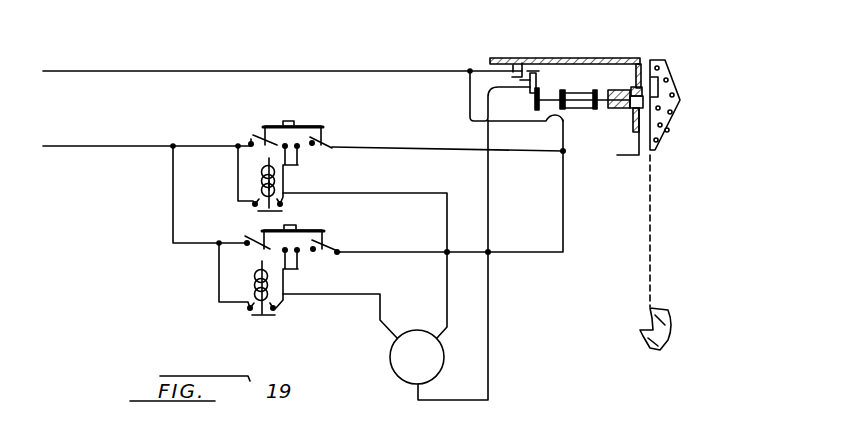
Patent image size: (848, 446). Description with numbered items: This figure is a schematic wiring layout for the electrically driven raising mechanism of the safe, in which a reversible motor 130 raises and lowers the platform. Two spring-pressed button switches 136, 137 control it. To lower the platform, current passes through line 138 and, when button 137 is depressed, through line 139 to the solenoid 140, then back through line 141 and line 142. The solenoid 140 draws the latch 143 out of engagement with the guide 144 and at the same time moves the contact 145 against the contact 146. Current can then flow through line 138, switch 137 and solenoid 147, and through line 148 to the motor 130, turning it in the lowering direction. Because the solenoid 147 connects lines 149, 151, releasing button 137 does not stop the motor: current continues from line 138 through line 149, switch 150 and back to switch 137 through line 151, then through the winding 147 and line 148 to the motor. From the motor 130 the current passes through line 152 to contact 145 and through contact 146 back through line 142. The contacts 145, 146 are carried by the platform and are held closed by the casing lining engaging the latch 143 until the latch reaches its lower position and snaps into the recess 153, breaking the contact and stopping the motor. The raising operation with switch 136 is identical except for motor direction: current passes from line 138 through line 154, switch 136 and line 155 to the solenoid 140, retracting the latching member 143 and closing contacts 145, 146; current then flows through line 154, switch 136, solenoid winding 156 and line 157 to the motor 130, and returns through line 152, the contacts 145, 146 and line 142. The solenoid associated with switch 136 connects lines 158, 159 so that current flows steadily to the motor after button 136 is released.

The motor 130 is at (398, 364).
The button switch 136 is at (311, 263).
The button switch 137 is at (295, 161).
The line 138 is at (85, 147).
The line 139 is at (389, 148).
The solenoid 140 is at (571, 95).
The line 141 is at (504, 122).
The line 142 is at (237, 72).
The latch 143 is at (642, 100).
The guide 144 is at (675, 88).
The contact 145 is at (540, 72).
The contact 146 is at (522, 64).
The solenoid winding 147 is at (276, 178).
The line 148 is at (421, 193).
The line 149 is at (236, 174).
The switch 150 is at (262, 210).
The line 151 is at (276, 185).
The line 152 is at (486, 296).
The recess 153 is at (672, 311).
The line 154 is at (173, 222).
The line 155 is at (550, 254).
The solenoid winding 156 is at (268, 289).
The line 157 is at (370, 293).
The line 158 is at (219, 293).
The line 159 is at (281, 297).